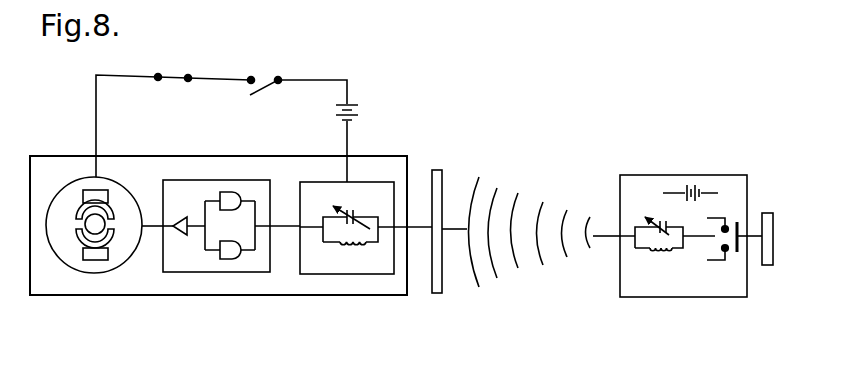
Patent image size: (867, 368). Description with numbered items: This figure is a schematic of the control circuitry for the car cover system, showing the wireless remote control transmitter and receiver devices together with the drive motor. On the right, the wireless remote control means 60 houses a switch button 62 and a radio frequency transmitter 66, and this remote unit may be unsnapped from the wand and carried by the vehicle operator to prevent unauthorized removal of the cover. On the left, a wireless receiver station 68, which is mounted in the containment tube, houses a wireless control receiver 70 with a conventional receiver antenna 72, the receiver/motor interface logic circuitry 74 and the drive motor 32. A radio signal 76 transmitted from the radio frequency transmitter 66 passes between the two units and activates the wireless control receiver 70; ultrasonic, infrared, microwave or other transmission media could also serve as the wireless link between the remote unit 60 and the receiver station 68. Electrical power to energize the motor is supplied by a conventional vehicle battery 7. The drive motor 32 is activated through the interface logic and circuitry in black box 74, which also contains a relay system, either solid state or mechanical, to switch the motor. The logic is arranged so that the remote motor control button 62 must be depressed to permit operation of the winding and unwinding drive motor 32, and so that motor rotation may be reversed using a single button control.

The vehicle battery 7 is at (362, 113).
The drive motor 32 is at (92, 269).
The wireless remote control means 60 is at (691, 221).
The switch button 62 is at (771, 214).
The radio frequency transmitter 66 is at (658, 257).
The wireless receiver station 68 is at (289, 299).
The wireless control receiver 70 is at (366, 204).
The receiver antenna 72 is at (438, 180).
The receiver/motor interface logic circuitry 74 is at (203, 175).
The radio signal 76 is at (523, 219).